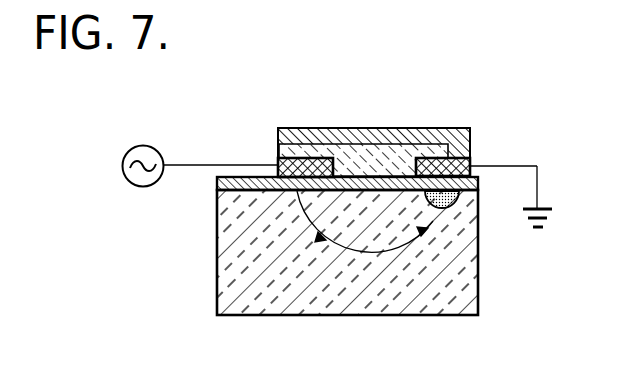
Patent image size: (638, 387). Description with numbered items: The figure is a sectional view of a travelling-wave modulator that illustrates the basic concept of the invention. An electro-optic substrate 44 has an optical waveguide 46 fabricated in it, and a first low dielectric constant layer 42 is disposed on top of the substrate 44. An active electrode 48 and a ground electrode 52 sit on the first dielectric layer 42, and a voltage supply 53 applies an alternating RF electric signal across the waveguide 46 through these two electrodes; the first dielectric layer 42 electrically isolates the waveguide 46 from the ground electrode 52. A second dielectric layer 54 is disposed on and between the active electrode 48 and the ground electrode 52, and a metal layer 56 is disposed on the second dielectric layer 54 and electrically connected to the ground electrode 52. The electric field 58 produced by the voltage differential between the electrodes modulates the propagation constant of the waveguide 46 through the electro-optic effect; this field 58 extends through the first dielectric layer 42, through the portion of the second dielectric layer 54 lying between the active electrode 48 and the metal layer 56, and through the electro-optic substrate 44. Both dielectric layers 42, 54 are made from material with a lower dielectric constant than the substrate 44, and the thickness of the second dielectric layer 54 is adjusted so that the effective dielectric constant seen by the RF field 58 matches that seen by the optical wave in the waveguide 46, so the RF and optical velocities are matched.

The first low dielectric constant layer 42 is at (217, 188).
The electro-optic substrate 44 is at (480, 258).
The optical waveguide 46 is at (452, 204).
The active electrode 48 is at (277, 157).
The ground electrode 52 is at (468, 158).
The voltage supply 53 is at (149, 145).
The second dielectric layer 54 is at (375, 146).
The metal layer 56 is at (407, 128).
The electric field 58 is at (318, 150).